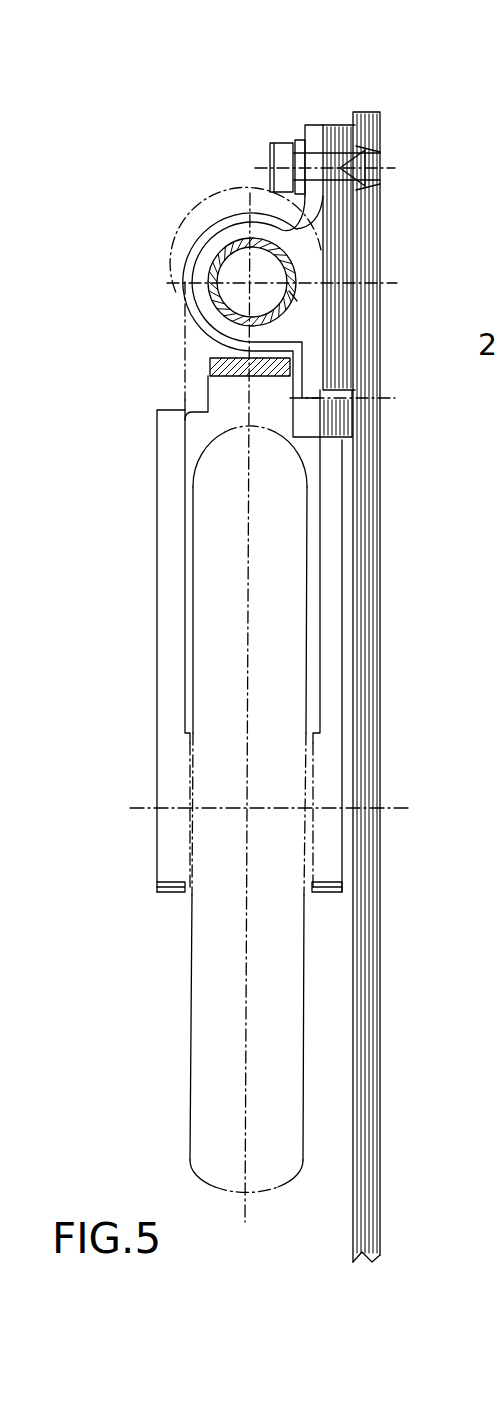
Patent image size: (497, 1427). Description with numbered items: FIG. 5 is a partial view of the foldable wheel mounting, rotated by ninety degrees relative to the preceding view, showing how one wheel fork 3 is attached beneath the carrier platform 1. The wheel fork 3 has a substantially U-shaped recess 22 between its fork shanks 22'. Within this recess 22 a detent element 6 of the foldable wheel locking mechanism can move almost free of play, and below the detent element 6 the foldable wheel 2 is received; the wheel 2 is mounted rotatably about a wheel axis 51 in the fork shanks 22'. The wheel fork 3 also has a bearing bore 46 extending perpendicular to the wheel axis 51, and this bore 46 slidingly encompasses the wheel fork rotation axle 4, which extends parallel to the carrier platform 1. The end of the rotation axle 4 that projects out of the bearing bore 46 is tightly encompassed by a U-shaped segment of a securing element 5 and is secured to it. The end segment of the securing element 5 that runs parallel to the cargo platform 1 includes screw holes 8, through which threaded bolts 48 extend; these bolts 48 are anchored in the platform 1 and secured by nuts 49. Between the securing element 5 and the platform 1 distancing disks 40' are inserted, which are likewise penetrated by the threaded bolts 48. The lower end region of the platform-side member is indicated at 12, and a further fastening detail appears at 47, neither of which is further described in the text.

The carrier platform 1 is at (372, 524).
The foldable wheel 2 is at (190, 1042).
The wheel fork 3 is at (157, 660).
The wheel fork rotation axle 4 is at (227, 285).
The securing element 5 is at (210, 252).
The detent element 6 is at (208, 367).
The screw hole 8 is at (313, 123).
The lower end of profile bar 12 is at (352, 1199).
The U-shaped recess 22 is at (167, 426).
The fork shank 22' is at (175, 586).
The distancing disk 40' is at (380, 237).
The bearing bore 46 is at (293, 297).
The nut 47 is at (363, 162).
The threaded bolt 48 is at (270, 160).
The nut 49 is at (283, 142).
The wheel axis 51 is at (227, 810).